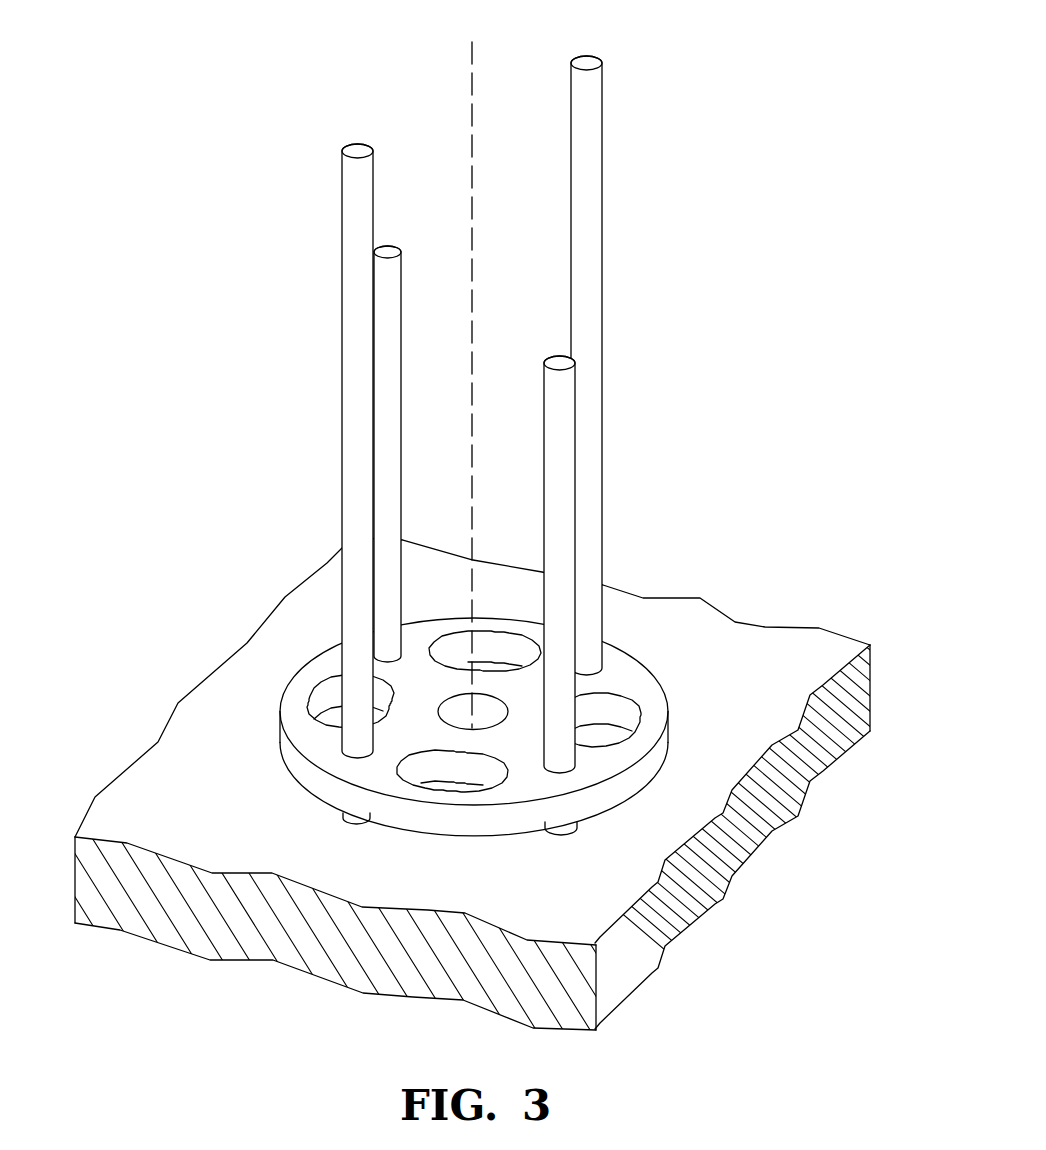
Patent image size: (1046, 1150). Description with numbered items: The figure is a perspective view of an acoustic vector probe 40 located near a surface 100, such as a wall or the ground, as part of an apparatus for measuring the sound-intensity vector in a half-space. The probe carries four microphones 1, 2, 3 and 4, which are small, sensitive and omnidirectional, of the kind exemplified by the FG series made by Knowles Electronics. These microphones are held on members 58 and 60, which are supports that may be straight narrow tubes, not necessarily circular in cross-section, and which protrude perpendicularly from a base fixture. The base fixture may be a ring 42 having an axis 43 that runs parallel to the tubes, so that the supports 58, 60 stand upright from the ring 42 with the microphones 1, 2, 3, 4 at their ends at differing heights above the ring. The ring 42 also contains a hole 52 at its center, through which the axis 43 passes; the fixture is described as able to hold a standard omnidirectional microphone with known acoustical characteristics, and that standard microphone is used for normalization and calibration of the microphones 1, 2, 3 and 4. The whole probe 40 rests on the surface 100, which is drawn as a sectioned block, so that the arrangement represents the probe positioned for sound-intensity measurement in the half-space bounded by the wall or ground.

The microphone 1 is at (590, 56).
The microphone 2 is at (362, 147).
The microphone 3 is at (385, 249).
The microphone 4 is at (562, 360).
The acoustic vector probe 40 is at (513, 423).
The ring 42 is at (523, 689).
The axis 43 is at (470, 65).
The central hole 52 is at (487, 703).
The support 58 is at (460, 384).
The support 60 is at (504, 487).
The surface 100 is at (202, 748).